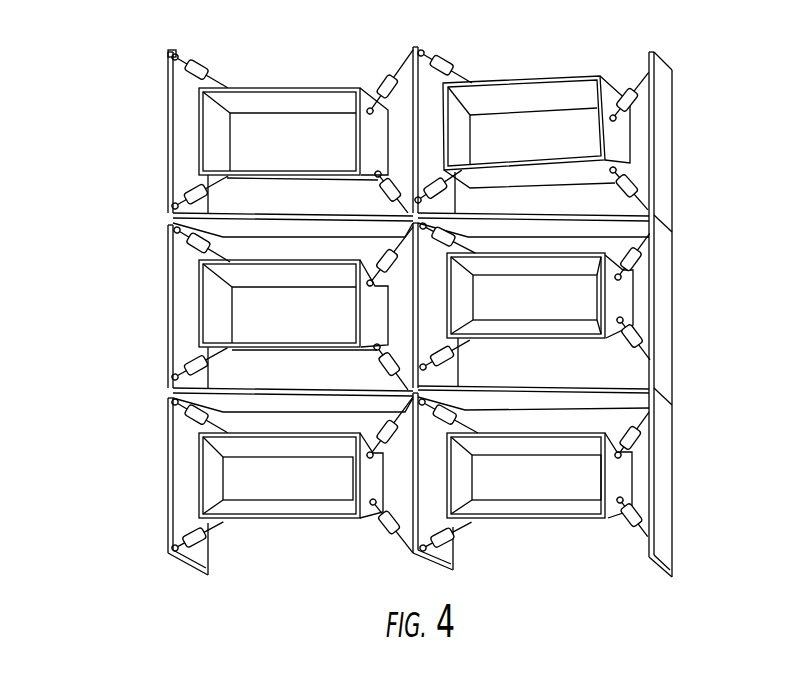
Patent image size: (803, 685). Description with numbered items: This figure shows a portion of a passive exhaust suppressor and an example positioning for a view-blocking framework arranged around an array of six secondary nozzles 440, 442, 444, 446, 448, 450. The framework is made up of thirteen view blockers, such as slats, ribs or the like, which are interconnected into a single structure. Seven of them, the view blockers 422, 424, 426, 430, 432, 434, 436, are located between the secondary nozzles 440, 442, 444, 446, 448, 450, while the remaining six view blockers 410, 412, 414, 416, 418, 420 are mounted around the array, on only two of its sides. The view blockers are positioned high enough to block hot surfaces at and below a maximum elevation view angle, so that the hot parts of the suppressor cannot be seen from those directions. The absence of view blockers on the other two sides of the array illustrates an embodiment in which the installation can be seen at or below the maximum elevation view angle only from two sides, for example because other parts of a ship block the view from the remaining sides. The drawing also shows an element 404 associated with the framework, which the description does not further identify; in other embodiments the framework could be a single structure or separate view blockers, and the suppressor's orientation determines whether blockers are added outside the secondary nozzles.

The actuator 404 is at (192, 65).
The view blocker 410 is at (167, 138).
The view blocker 412 is at (170, 333).
The view blocker 414 is at (175, 495).
The view blocker 416 is at (657, 100).
The view blocker 418 is at (660, 320).
The view blocker 420 is at (659, 510).
The view blocker 422 is at (427, 108).
The view blocker 424 is at (425, 283).
The view blocker 426 is at (425, 446).
The view blocker 430 is at (615, 218).
The view blocker 432 is at (615, 388).
The view blocker 434 is at (218, 216).
The view blocker 436 is at (243, 388).
The secondary nozzle 440 is at (215, 121).
The secondary nozzle 442 is at (220, 305).
The secondary nozzle 444 is at (217, 470).
The secondary nozzle 446 is at (607, 105).
The secondary nozzle 448 is at (612, 290).
The secondary nozzle 450 is at (616, 470).